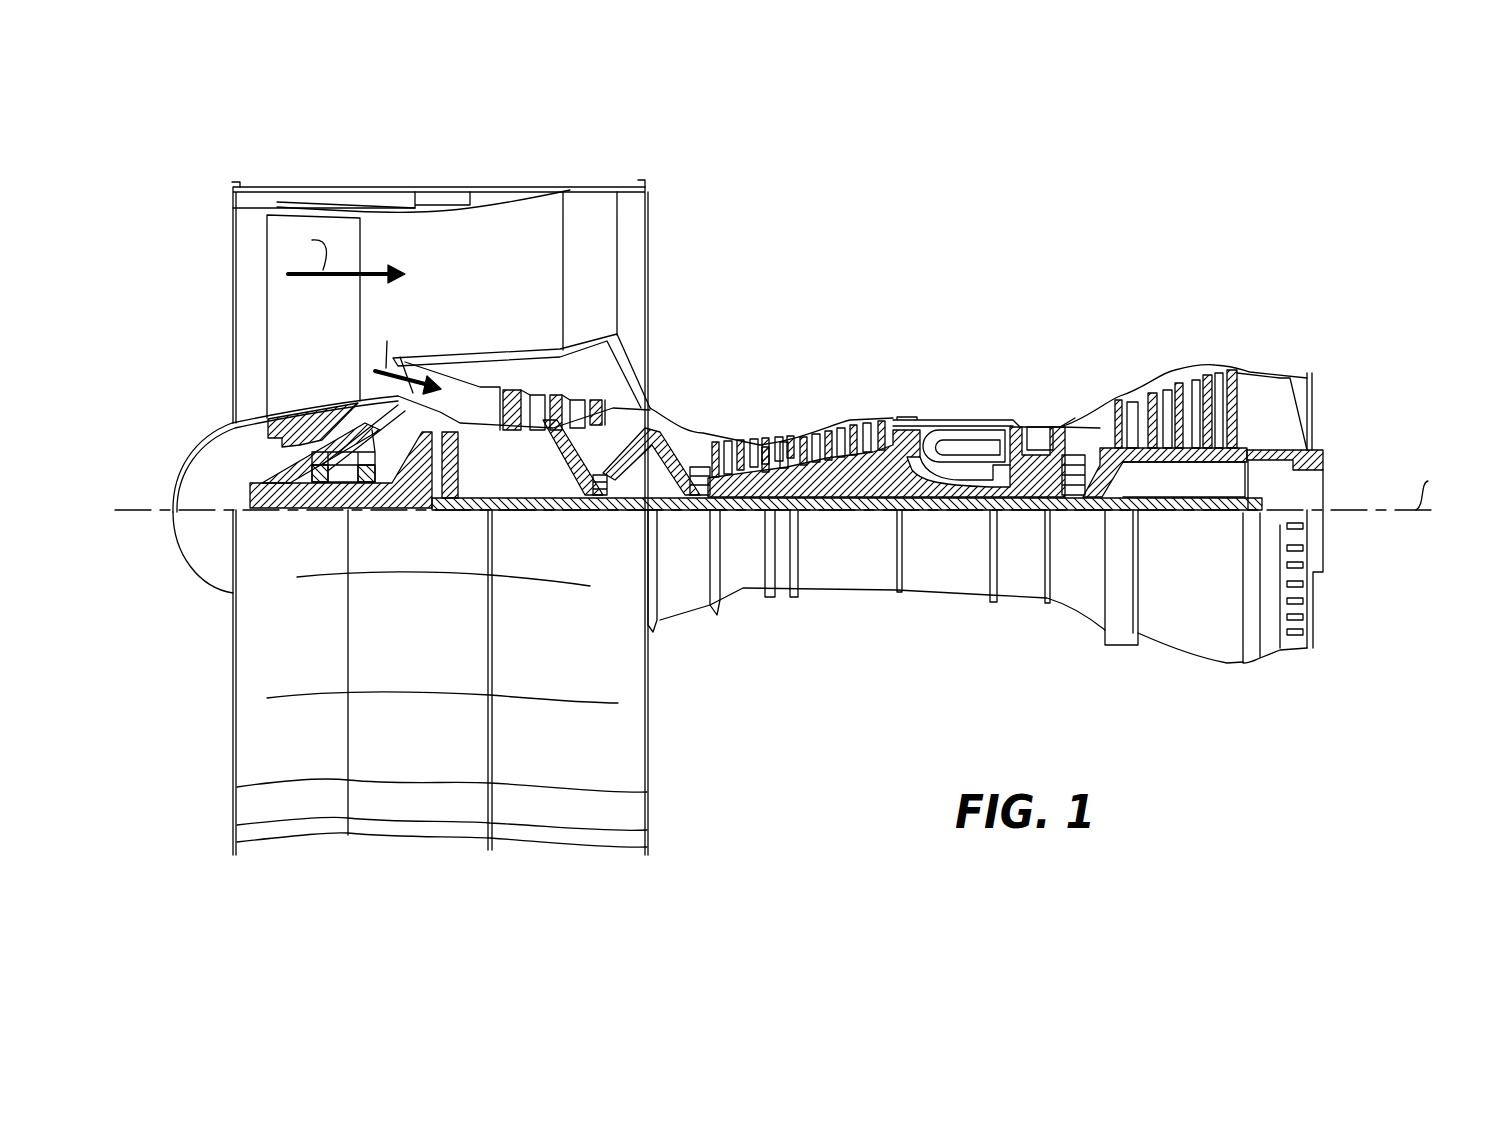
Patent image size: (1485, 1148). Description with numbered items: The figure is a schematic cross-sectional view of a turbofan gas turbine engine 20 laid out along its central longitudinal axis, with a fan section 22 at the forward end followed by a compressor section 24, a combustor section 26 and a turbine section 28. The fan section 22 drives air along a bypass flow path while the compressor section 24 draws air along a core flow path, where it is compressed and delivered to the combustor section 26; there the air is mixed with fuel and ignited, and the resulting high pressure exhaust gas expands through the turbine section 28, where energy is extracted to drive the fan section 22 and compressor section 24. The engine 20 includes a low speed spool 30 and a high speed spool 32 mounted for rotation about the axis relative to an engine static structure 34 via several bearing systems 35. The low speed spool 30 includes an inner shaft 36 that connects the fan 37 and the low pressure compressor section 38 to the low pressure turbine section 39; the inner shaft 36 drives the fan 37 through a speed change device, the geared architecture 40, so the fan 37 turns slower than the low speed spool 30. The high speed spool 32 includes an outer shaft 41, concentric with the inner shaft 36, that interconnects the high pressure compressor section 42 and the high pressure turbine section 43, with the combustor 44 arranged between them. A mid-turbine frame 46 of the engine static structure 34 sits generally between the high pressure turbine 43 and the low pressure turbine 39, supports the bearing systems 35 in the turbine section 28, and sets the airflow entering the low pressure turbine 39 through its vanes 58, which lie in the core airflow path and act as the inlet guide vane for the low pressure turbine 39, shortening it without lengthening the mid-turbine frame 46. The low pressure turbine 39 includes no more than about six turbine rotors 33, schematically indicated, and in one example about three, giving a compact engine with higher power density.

The gas turbine engine 20 is at (967, 245).
The fan section 22 is at (358, 176).
The compressor section 24 is at (700, 407).
The combustor section 26 is at (990, 401).
The turbine section 28 is at (944, 465).
The low speed spool 30 is at (628, 520).
The high speed spool 32 is at (876, 470).
The turbine rotors 33 is at (1222, 458).
The engine static structure 34 is at (750, 597).
The bearing systems 35 is at (1115, 500).
The inner shaft 36 is at (667, 512).
The fan 37 is at (323, 328).
The low pressure compressor section 38 is at (557, 408).
The low pressure turbine section 39 is at (1178, 387).
The geared architecture 40 is at (445, 495).
The outer shaft 41 is at (827, 497).
The high pressure compressor section 42 is at (803, 470).
The high pressure turbine section 43 is at (1018, 440).
The combustor 44 is at (959, 445).
The mid-turbine frame 46 is at (1088, 407).
The vanes 58 is at (1080, 433).